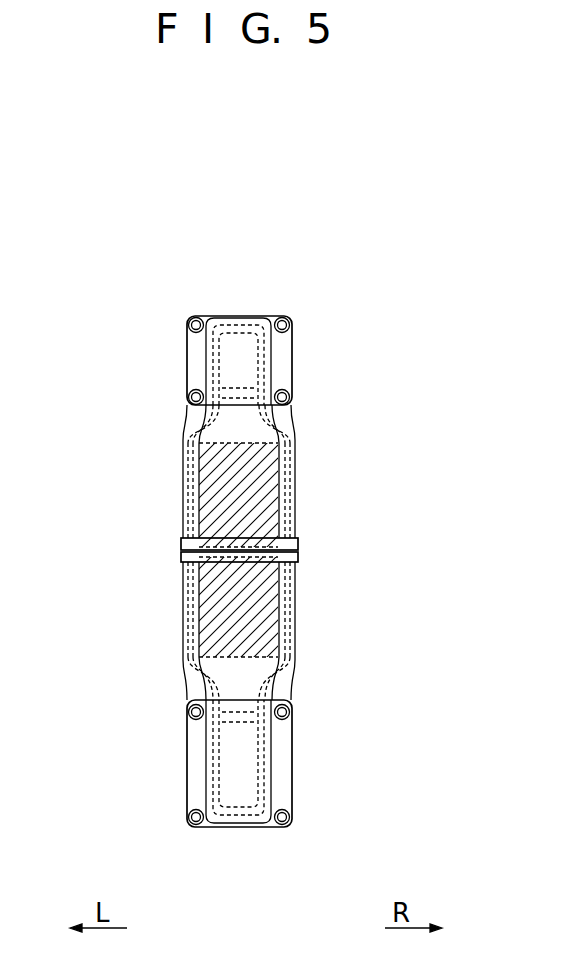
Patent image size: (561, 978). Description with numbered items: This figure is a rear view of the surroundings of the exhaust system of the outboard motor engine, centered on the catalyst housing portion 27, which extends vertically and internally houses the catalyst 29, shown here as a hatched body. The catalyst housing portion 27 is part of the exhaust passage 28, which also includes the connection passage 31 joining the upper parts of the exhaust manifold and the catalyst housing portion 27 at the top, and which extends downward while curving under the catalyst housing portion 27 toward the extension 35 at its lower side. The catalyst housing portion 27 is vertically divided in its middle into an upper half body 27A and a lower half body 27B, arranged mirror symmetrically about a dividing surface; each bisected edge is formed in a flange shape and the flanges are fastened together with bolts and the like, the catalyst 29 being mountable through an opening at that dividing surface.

The catalyst housing portion 27 is at (272, 552).
The upper half body 27A is at (297, 485).
The lower half body 27B is at (297, 615).
The exhaust passage 28 is at (238, 415).
The catalyst 29 is at (220, 491).
The connection passage 31 is at (282, 355).
The extension 35 is at (282, 764).